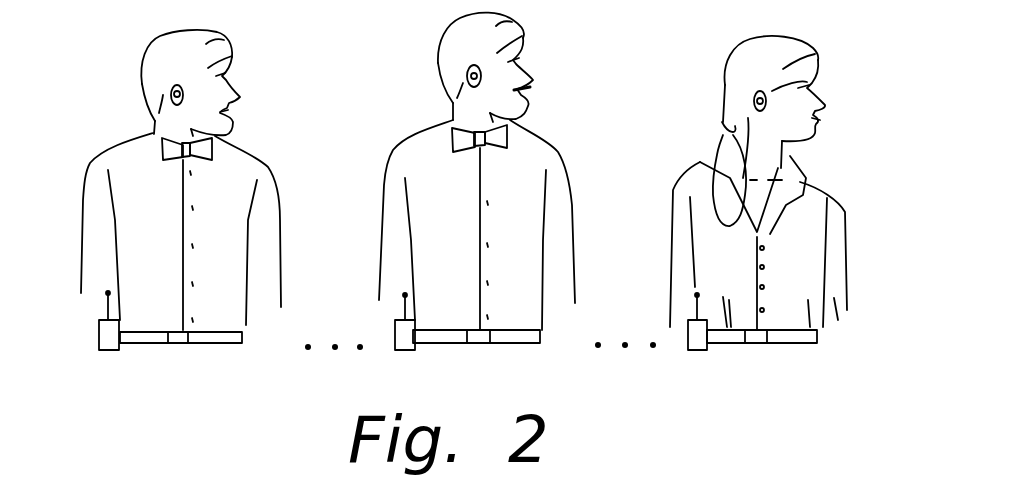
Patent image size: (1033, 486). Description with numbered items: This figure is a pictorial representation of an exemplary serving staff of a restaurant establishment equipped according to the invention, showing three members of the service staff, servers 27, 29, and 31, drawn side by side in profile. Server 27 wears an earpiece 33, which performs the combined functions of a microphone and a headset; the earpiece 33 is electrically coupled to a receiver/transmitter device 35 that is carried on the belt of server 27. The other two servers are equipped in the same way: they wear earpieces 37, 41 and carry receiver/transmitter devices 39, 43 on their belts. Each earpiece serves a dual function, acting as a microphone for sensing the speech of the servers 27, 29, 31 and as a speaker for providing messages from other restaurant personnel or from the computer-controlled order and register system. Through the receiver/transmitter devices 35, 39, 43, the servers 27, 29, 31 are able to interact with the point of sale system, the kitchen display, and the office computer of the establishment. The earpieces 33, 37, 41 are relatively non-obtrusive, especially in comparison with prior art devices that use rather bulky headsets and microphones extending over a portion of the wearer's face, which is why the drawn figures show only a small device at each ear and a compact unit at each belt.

The server 27 is at (88, 194).
The server 29 is at (387, 179).
The server 31 is at (688, 186).
The earpiece 33 is at (172, 89).
The earpiece 37 is at (470, 74).
The earpiece 41 is at (755, 101).
The receiver/transmitter device 35 is at (100, 331).
The receiver/transmitter device 39 is at (397, 333).
The receiver/transmitter device 43 is at (690, 333).